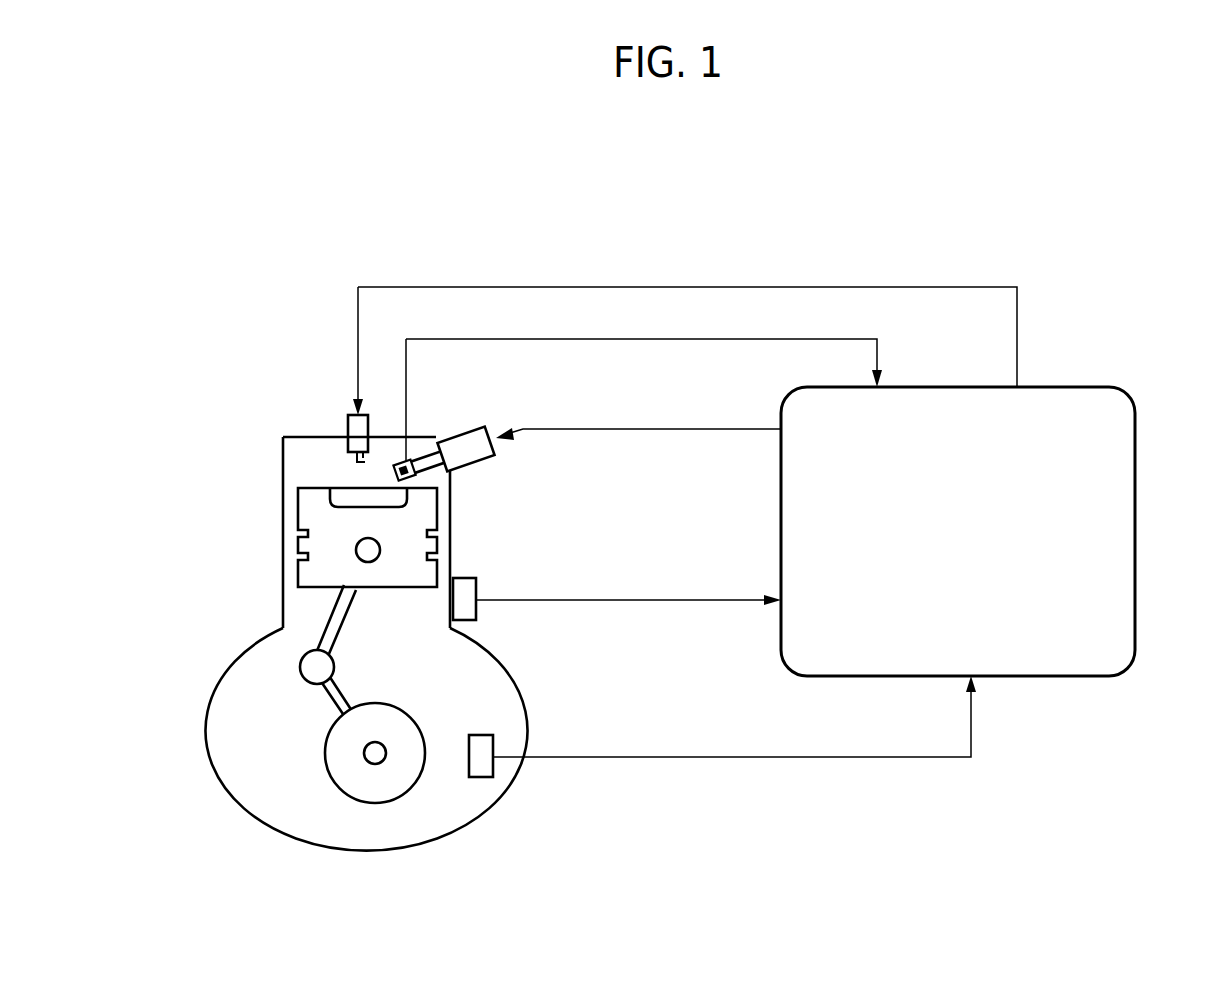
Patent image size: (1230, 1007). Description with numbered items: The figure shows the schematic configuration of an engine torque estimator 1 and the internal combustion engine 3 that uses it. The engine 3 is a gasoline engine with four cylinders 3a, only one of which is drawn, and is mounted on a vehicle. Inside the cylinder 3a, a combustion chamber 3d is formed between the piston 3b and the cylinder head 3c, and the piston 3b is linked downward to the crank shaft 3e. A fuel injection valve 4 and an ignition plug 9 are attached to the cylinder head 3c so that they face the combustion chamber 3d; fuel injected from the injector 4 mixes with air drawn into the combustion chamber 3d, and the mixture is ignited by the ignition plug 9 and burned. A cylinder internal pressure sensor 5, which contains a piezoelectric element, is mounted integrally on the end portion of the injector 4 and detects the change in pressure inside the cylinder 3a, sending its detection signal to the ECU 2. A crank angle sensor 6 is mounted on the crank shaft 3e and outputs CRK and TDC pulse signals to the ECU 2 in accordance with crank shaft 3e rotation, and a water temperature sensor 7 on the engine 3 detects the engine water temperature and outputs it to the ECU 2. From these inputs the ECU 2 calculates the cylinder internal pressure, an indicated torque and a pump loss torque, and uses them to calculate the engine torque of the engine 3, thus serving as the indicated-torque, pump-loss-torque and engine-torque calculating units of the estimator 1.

The engine torque estimator 1 is at (1138, 151).
The ECU 2 is at (1135, 475).
The internal combustion engine 3 is at (184, 760).
The cylinder 3a is at (268, 484).
The piston 3b is at (297, 522).
The cylinder head 3c is at (305, 437).
The combustion chamber 3d is at (327, 470).
The crank shaft 3e is at (386, 753).
The fuel injection valve 4 is at (463, 433).
The cylinder internal pressure sensor 5 is at (417, 470).
The crank angle sensor 6 is at (480, 735).
The water temperature sensor 7 is at (466, 578).
The ignition plug 9 is at (347, 430).